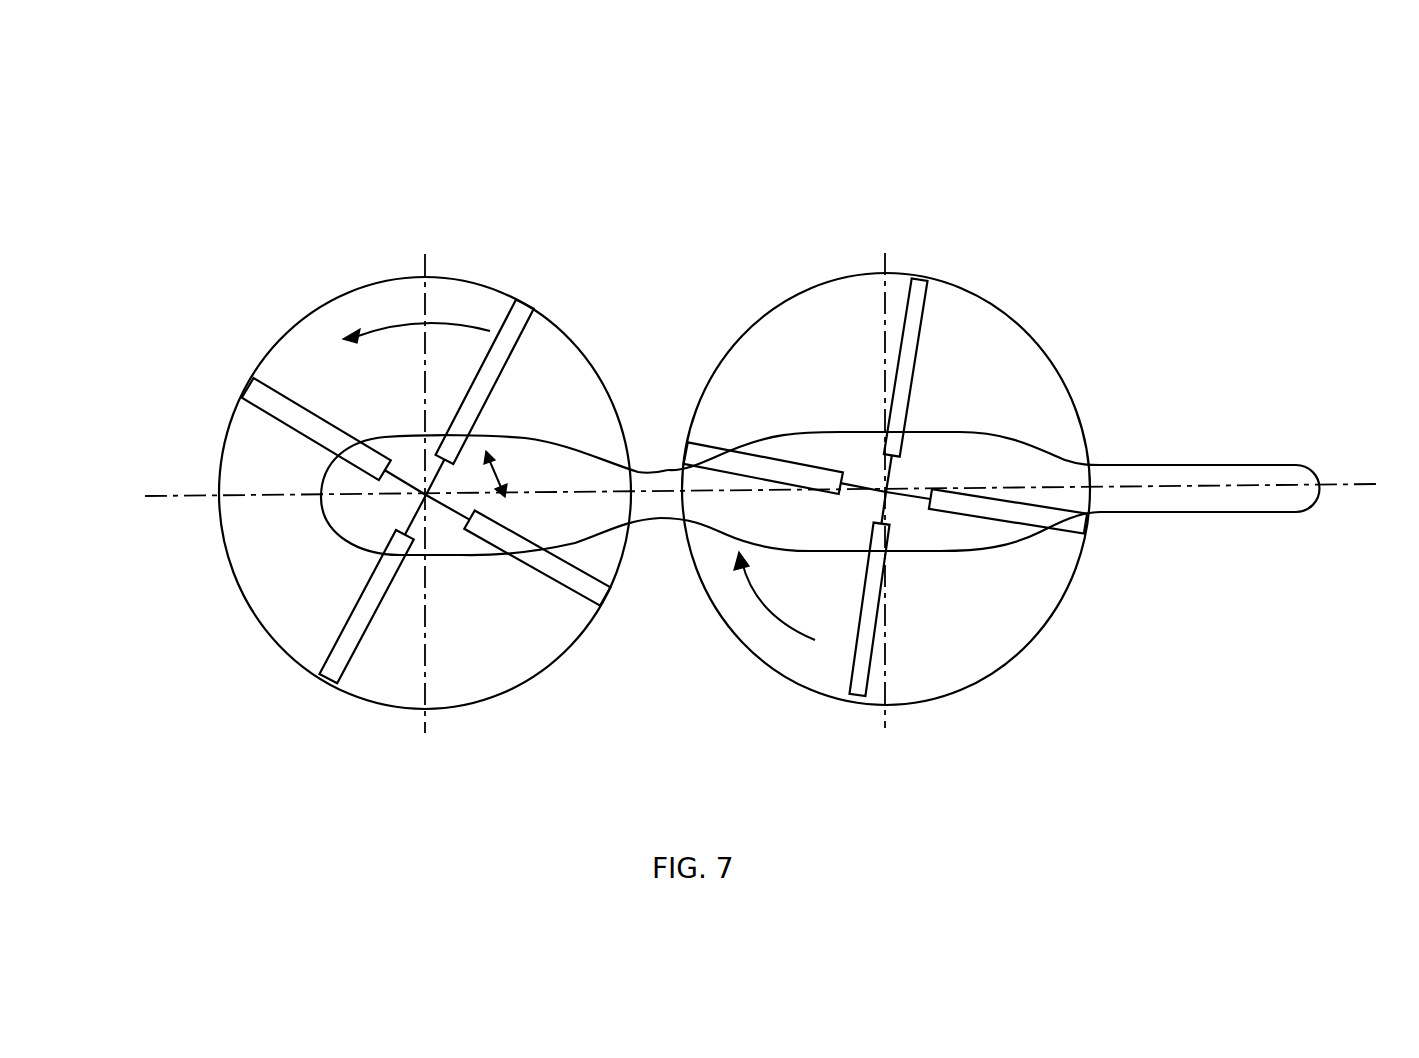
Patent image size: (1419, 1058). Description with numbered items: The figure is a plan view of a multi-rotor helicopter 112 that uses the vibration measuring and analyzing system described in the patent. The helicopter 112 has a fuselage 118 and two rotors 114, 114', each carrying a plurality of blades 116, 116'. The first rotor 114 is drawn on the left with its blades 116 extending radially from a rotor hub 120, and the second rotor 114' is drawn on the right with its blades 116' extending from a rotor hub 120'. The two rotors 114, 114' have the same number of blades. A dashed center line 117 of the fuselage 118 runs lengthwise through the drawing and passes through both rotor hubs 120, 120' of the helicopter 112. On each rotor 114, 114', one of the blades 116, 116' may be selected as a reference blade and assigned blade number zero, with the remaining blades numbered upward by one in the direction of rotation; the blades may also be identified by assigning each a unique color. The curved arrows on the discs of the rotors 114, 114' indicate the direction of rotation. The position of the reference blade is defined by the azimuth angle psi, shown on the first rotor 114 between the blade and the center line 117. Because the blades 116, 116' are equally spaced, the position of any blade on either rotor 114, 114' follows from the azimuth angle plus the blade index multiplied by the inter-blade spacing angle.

The helicopter 112 is at (781, 487).
The rotor 114 is at (425, 528).
The rotor 114' is at (886, 526).
The blades 116 is at (682, 494).
The blades 116' is at (835, 484).
The center line 117 is at (1353, 484).
The fuselage 118 is at (1223, 512).
The rotor hub 120 is at (468, 501).
The rotor hub 120' is at (880, 515).